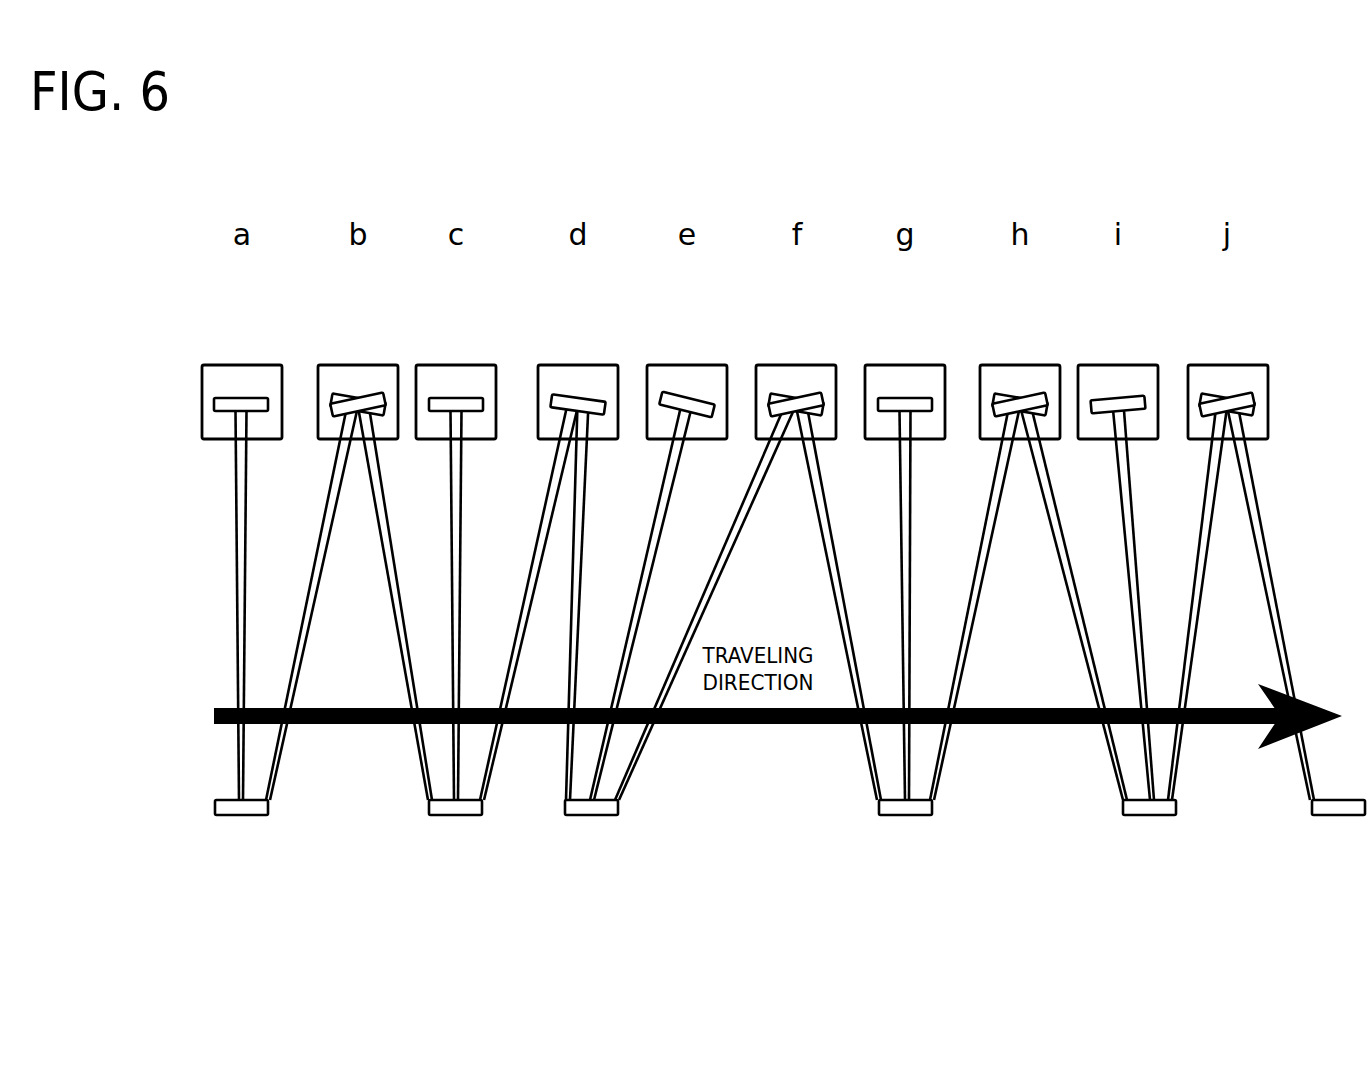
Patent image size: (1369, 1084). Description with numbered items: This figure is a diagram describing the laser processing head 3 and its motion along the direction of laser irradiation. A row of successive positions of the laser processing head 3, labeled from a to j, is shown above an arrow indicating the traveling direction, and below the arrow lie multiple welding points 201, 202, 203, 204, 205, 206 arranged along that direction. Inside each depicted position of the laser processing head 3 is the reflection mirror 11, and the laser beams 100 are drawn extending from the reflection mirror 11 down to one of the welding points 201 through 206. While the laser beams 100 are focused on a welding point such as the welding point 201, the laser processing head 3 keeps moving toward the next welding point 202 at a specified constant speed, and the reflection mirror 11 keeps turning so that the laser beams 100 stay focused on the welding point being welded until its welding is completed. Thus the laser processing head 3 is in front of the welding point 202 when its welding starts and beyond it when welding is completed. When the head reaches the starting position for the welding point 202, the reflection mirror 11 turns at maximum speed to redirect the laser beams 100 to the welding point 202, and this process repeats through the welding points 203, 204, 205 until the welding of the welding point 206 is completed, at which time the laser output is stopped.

The laser processing head 3 is at (249, 364).
The reflection mirror 11 is at (217, 405).
The laser beams 100 is at (237, 573).
The welding point 201 is at (250, 816).
The welding point 202 is at (457, 816).
The welding point 203 is at (585, 816).
The welding point 204 is at (890, 816).
The welding point 205 is at (1137, 816).
The welding point 206 is at (1335, 816).